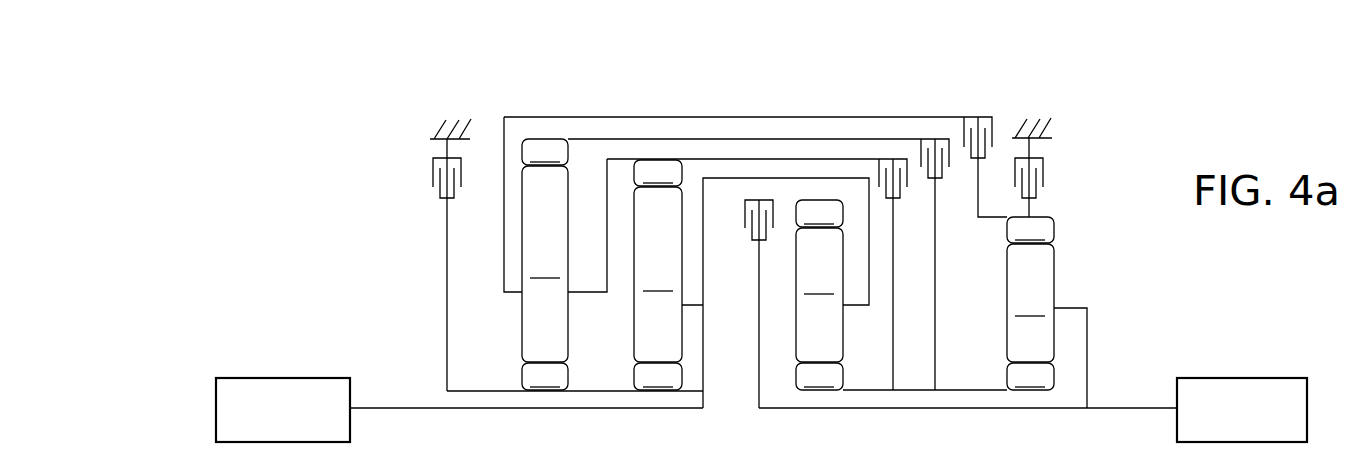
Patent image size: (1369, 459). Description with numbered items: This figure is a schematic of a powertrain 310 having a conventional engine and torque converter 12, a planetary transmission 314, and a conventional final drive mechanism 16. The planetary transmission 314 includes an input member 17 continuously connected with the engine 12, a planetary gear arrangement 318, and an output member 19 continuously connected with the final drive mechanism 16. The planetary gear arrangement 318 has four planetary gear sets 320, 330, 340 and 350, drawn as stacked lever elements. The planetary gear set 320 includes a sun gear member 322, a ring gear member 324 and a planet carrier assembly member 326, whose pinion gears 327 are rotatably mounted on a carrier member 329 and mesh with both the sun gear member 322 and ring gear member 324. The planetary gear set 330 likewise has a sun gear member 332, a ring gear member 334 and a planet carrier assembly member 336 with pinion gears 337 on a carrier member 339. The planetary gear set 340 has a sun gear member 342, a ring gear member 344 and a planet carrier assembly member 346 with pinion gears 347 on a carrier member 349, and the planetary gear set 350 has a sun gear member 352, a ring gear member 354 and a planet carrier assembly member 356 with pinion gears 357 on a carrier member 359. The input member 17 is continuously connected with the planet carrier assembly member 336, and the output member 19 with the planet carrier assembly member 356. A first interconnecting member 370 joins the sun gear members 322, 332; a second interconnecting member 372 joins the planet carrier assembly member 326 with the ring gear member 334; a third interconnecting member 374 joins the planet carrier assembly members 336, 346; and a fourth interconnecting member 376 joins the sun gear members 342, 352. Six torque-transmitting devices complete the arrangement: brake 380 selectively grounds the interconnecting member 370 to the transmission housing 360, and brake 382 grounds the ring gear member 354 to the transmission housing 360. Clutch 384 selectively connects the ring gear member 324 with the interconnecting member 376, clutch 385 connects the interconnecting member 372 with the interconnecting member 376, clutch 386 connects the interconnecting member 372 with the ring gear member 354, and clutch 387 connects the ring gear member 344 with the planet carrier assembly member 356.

The engine and torque converter 12 is at (272, 363).
The final drive mechanism 16 is at (1255, 365).
The input member 17 is at (382, 408).
The output member 19 is at (1137, 408).
The powertrain 310 is at (689, 80).
The planetary transmission 314 is at (775, 78).
The planetary gear arrangement 318 is at (865, 78).
The planetary gear set 320 is at (528, 296).
The sun gear member 322 is at (538, 394).
The ring gear member 324 is at (545, 151).
The planet carrier assembly member 326 is at (580, 310).
The pinion gears 327 is at (545, 264).
The carrier member 329 is at (592, 293).
The planetary gear set 330 is at (645, 307).
The sun gear member 332 is at (657, 394).
The ring gear member 334 is at (658, 172).
The planet carrier assembly member 336 is at (687, 322).
The pinion gears 337 is at (658, 274).
The carrier member 339 is at (695, 307).
The planetary gear set 340 is at (807, 327).
The sun gear member 342 is at (822, 394).
The ring gear member 344 is at (819, 213).
The planet carrier assembly member 346 is at (852, 316).
The pinion gears 347 is at (819, 295).
The carrier member 349 is at (863, 307).
The planetary gear set 350 is at (1041, 335).
The sun gear member 352 is at (1027, 394).
The ring gear member 354 is at (1030, 229).
The planet carrier assembly member 356 is at (1064, 297).
The pinion gears 357 is at (1030, 303).
The carrier member 359 is at (1072, 308).
The transmission housing 360 is at (446, 124).
The first interconnecting member 370 is at (590, 393).
The second interconnecting member 372 is at (607, 188).
The third interconnecting member 374 is at (731, 178).
The fourth interconnecting member 376 is at (983, 392).
The brake 380 is at (419, 180).
The brake 382 is at (1053, 180).
The clutch 384 is at (917, 150).
The clutch 385 is at (875, 170).
The clutch 386 is at (957, 130).
The clutch 387 is at (742, 235).